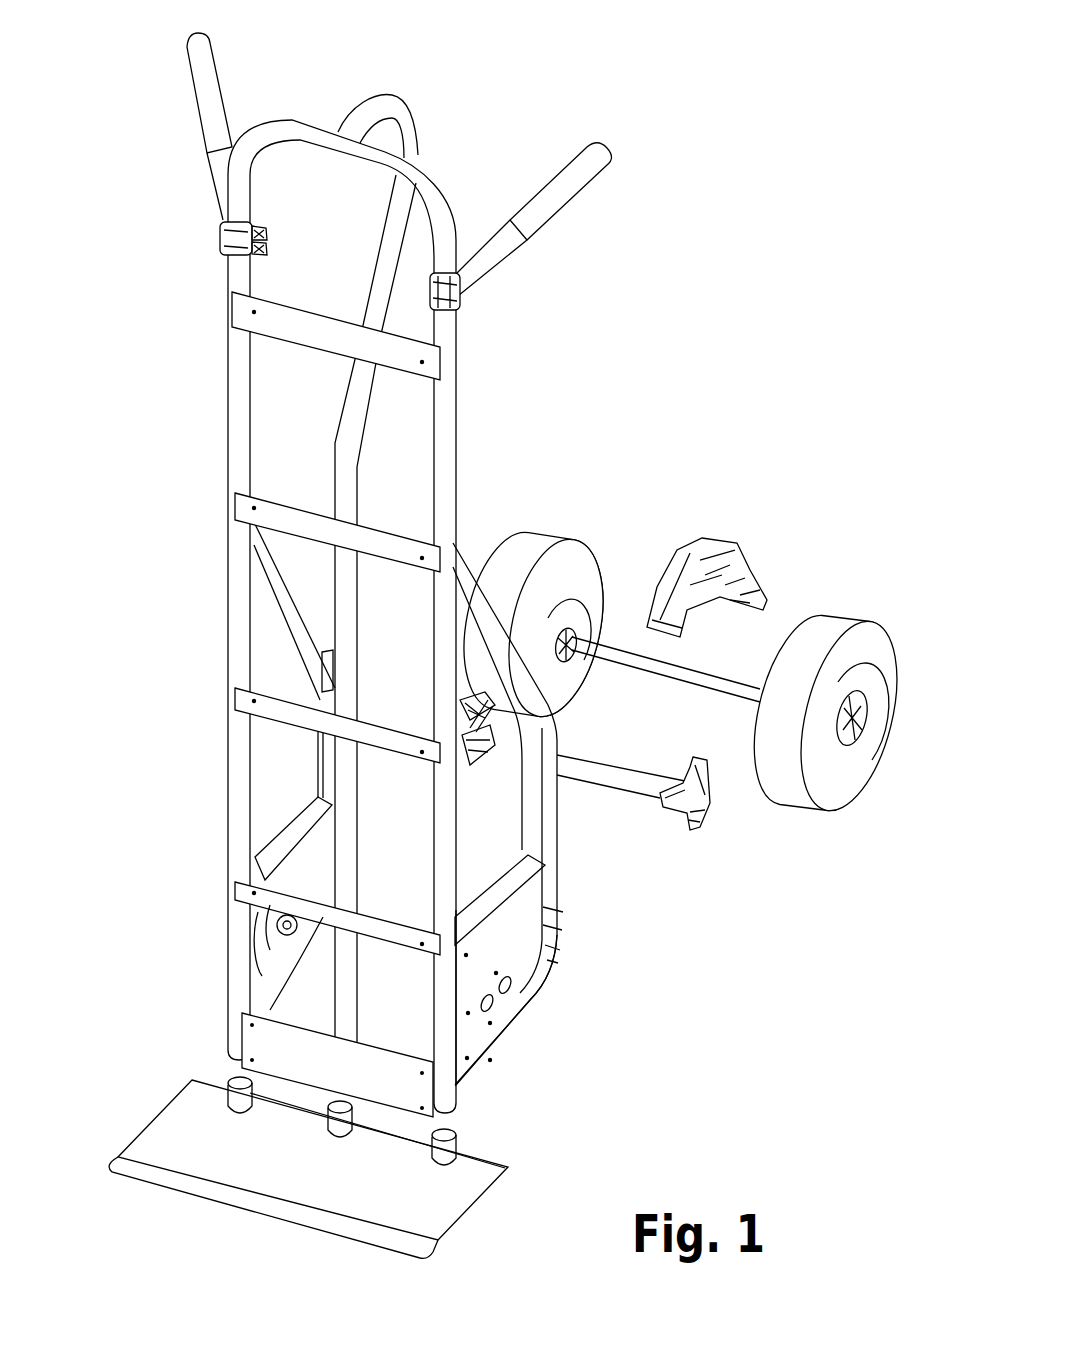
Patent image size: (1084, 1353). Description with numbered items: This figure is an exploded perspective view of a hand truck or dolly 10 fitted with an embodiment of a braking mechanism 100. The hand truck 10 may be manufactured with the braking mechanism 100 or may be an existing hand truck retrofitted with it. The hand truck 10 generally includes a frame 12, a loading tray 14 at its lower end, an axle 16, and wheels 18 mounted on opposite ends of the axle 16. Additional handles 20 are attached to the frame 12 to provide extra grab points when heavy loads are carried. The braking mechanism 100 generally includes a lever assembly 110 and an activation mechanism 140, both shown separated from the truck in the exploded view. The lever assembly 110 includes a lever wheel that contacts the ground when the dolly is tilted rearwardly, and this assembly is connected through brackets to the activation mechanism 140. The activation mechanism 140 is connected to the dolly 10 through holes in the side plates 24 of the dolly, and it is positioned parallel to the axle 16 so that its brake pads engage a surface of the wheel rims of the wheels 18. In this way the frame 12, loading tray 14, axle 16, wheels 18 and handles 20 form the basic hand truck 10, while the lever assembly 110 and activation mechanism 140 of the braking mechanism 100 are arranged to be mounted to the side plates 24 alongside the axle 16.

The hand truck 10 is at (798, 271).
The frame 12 is at (452, 468).
The loading tray 14 is at (197, 1135).
The axle 16 is at (735, 690).
The wheels 18 is at (532, 556).
The additional handles 20 is at (205, 80).
The side plates 24 is at (517, 945).
The braking mechanism 100 is at (713, 895).
The lever assembly 110 is at (717, 532).
The activation mechanism 140 is at (692, 847).